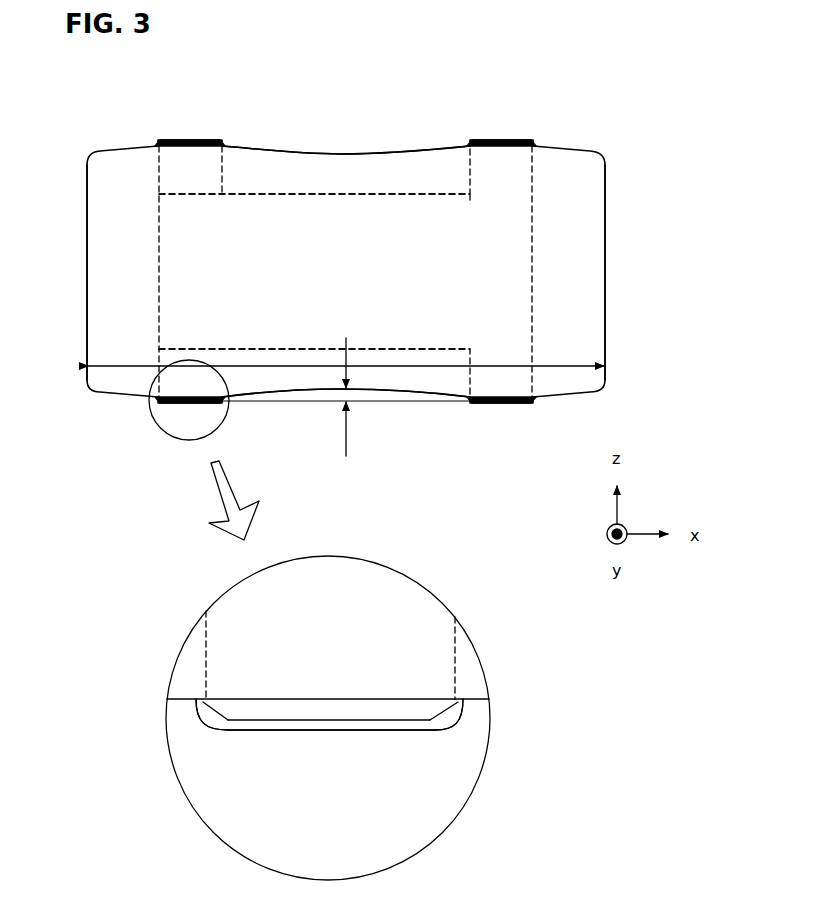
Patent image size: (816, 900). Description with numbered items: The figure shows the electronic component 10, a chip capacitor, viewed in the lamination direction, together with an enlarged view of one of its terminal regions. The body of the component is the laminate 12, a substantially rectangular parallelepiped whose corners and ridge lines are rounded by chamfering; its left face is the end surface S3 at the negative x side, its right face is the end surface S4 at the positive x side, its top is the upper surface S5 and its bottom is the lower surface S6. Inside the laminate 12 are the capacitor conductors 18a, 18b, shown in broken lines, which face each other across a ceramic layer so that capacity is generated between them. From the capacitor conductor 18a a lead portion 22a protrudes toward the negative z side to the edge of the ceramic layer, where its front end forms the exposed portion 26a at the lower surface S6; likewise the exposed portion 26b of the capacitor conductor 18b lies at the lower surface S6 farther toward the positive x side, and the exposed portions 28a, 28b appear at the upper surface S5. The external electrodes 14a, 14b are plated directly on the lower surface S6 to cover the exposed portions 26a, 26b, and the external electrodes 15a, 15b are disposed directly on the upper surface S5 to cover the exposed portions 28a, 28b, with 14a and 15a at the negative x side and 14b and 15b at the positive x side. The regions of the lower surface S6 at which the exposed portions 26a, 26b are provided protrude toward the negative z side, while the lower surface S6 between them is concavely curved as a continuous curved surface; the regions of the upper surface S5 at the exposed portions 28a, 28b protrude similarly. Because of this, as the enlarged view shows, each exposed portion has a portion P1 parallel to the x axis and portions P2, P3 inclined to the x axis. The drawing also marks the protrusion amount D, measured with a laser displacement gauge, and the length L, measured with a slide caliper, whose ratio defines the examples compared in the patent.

The electronic component 10 is at (96, 98).
The laminate 12 is at (616, 238).
The external electrode 14a is at (160, 401).
The external electrode 14b is at (468, 401).
The external electrode 15a is at (223, 144).
The external electrode 15b is at (534, 144).
The capacitor conductor 18a is at (483, 309).
The capacitor conductor 18b is at (314, 271).
The lead portion 22a is at (440, 648).
The exposed portion 26a is at (183, 405).
The exposed portion 26b is at (500, 404).
The exposed portion 28a is at (178, 138).
The exposed portion 28b is at (499, 138).
The end surface S3 is at (86, 307).
The end surface S4 is at (606, 287).
The upper surface S5 is at (331, 151).
The lower surface S6 is at (258, 398).
The portion parallel to the x-axis P1 is at (296, 722).
The portion inclined to the x axis P2 is at (212, 712).
The portion inclined to the x axis P3 is at (450, 712).
The length L is at (346, 352).
The protrusion amount D is at (334, 397).